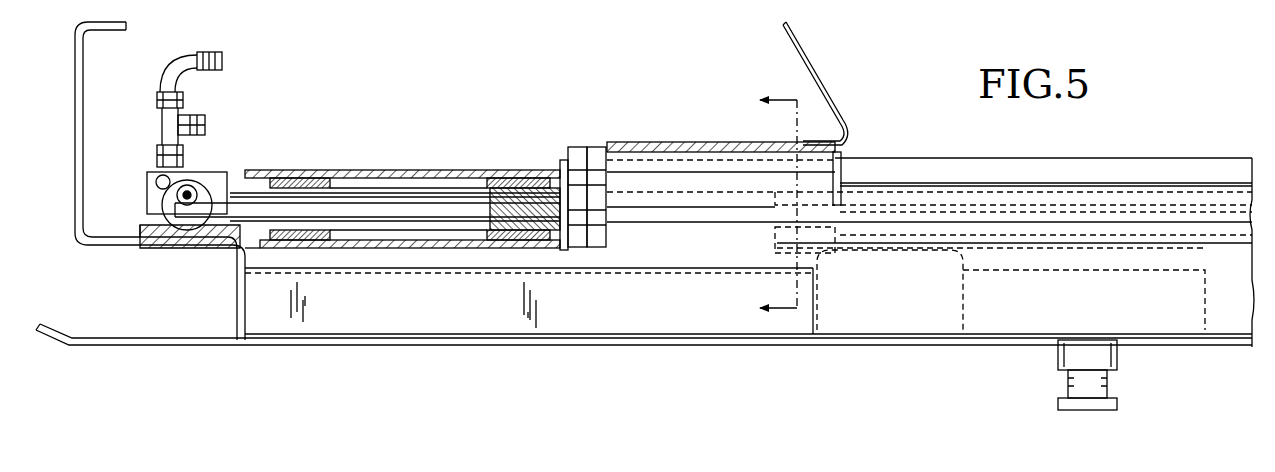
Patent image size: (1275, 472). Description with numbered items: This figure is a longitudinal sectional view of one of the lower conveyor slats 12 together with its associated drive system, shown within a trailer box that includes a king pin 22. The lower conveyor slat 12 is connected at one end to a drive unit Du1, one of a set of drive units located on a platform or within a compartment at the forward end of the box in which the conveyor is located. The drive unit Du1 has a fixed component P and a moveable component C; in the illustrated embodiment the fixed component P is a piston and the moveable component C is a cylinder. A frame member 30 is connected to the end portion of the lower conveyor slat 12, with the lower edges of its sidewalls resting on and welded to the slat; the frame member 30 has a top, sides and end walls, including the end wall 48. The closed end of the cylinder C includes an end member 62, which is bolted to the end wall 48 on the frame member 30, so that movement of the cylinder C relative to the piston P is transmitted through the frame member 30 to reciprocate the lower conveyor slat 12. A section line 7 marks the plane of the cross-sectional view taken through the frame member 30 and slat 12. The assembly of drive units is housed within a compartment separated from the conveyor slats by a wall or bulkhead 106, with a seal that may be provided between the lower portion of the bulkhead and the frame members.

The lower conveyor slat 12 is at (1112, 198).
The king pin 22 is at (1073, 357).
The frame member 30 is at (858, 143).
The end wall 48 is at (594, 150).
The end member 62 is at (575, 148).
The bulkhead 106 is at (808, 60).
The section line 7- 7 is at (758, 205).
The cylinder C is at (467, 170).
The drive unit Du1 is at (350, 170).
The piston P is at (397, 205).